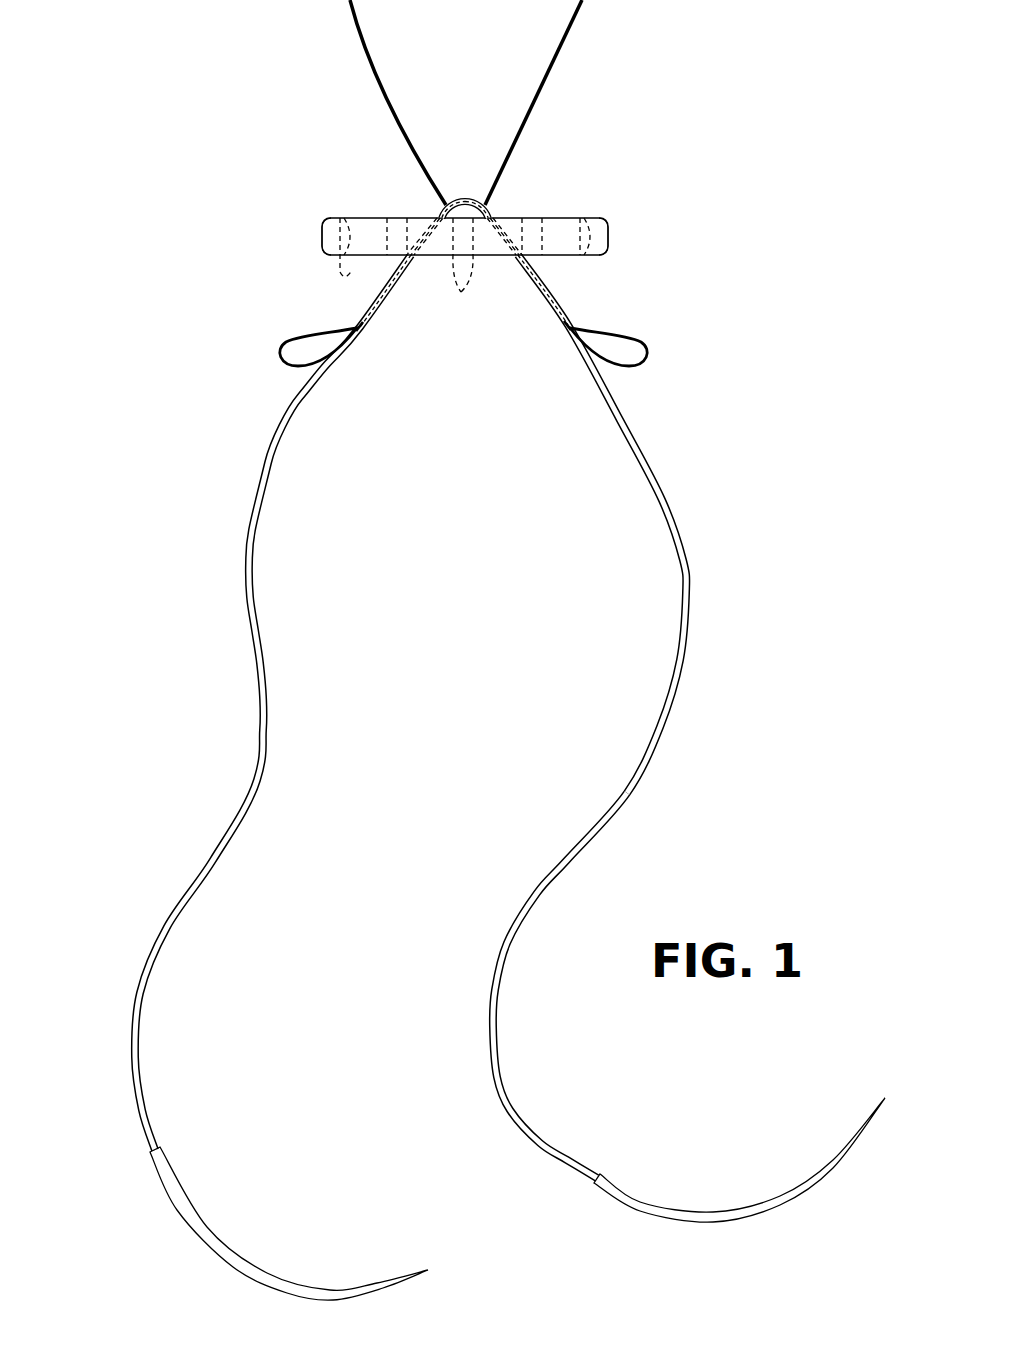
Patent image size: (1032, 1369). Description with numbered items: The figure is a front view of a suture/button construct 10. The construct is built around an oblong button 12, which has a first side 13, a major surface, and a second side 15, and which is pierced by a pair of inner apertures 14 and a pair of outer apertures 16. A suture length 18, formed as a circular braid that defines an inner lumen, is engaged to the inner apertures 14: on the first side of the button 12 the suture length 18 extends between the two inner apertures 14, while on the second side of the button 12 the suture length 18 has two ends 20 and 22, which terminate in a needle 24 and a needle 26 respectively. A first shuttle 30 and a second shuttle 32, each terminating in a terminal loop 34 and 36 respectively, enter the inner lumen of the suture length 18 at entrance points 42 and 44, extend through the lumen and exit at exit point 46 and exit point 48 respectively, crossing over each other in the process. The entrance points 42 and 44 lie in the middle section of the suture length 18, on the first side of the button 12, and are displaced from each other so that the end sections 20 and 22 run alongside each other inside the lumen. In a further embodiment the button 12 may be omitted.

The suture/button construct 10 is at (214, 234).
The oblong button 12 is at (610, 237).
The first side 13 is at (360, 218).
The inner apertures 14 is at (464, 269).
The second side 15 is at (578, 256).
The outer apertures 16 is at (580, 218).
The suture length 18 is at (691, 597).
The end 20 is at (490, 1013).
The end 22 is at (131, 1057).
The needle 24 is at (765, 1198).
The needle 26 is at (330, 1290).
The first shuttle 30 is at (383, 92).
The second shuttle 32 is at (545, 92).
The terminal loop 34 is at (649, 355).
The terminal loop 36 is at (282, 352).
The entrance point 42 is at (440, 207).
The entrance point 44 is at (494, 207).
The exit point 46 is at (573, 325).
The exit point 48 is at (354, 326).